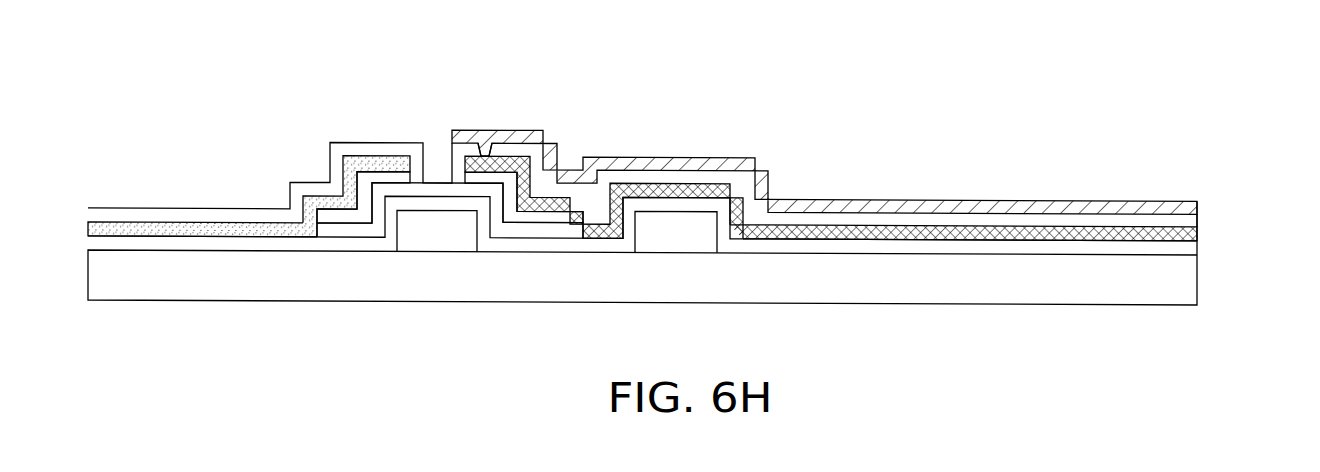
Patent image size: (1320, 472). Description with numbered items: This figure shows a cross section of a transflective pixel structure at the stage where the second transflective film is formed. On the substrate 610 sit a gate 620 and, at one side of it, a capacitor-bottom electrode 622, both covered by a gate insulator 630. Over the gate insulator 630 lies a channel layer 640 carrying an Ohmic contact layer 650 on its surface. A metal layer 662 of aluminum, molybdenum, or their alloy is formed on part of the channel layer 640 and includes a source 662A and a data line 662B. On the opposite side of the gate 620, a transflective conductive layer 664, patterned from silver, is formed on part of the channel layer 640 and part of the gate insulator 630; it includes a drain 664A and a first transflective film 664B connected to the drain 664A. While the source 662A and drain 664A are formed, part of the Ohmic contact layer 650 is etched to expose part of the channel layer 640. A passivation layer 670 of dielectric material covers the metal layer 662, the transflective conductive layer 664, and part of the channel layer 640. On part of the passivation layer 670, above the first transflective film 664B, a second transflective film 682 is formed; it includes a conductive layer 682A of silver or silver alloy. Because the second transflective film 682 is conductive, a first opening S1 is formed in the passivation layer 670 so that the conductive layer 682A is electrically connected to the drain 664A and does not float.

The substrate 610 is at (1176, 282).
The gate 620 is at (443, 232).
The capacitor-bottom electrode 622 is at (683, 233).
The gate insulator 630 is at (151, 240).
The channel layer 640 is at (520, 235).
The Ohmic contact layer 650 is at (547, 218).
The metal layer 662 is at (249, 282).
The source 662A is at (343, 210).
The data line 662B is at (232, 231).
The transflective conductive layer 664 is at (831, 132).
The drain 664A is at (553, 186).
The first transflective film 664B is at (814, 232).
The passivation layer 670 is at (308, 188).
The conductive layer 682A is at (483, 146).
The second transflective film 682 is at (810, 138).
The first opening S1 is at (487, 146).